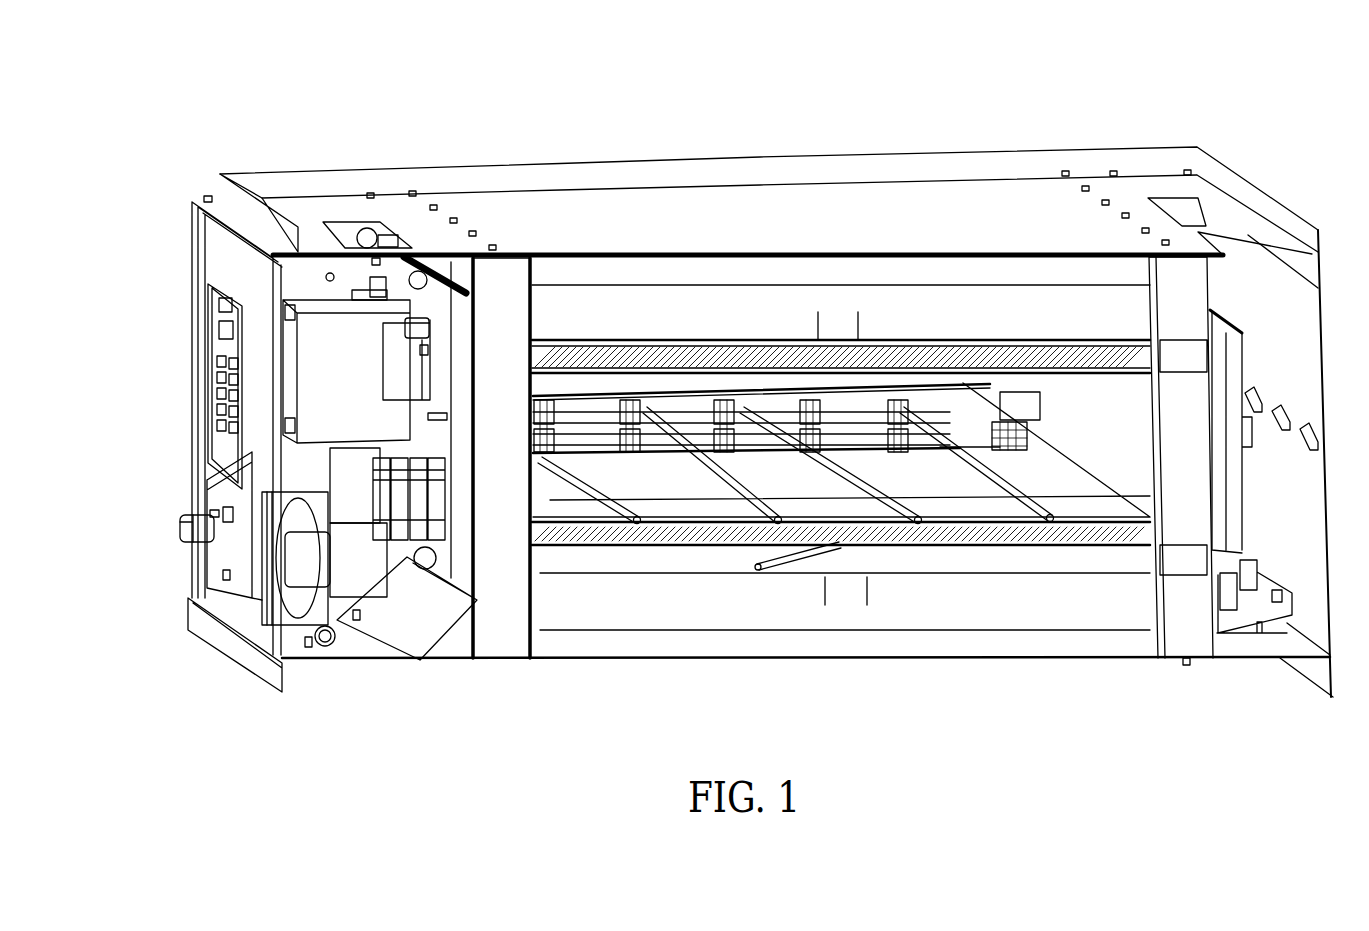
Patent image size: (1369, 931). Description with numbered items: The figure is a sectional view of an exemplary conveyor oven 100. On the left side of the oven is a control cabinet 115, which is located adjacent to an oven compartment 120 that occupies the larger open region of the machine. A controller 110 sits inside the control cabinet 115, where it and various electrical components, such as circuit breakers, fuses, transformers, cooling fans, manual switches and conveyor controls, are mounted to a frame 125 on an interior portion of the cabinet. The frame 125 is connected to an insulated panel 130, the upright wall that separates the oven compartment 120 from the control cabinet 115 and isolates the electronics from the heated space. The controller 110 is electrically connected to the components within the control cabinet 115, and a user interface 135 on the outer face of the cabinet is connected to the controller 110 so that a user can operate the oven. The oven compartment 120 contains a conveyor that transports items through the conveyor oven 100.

The conveyor oven 100 is at (1247, 103).
The controller 110 is at (349, 298).
The control cabinet 115 is at (333, 677).
The oven compartment 120 is at (974, 318).
The frame 125 is at (448, 275).
The insulated panel 130 is at (510, 256).
The user interface 135 is at (216, 330).